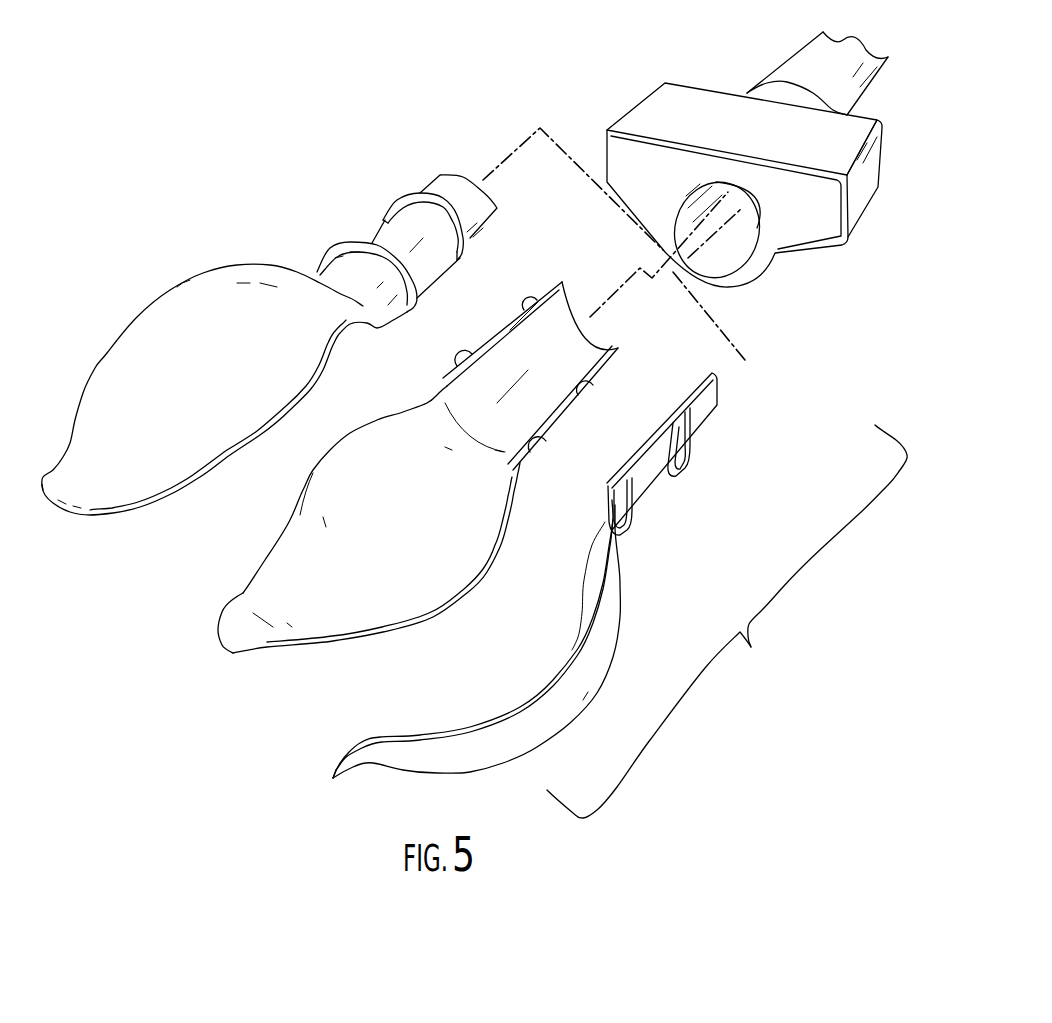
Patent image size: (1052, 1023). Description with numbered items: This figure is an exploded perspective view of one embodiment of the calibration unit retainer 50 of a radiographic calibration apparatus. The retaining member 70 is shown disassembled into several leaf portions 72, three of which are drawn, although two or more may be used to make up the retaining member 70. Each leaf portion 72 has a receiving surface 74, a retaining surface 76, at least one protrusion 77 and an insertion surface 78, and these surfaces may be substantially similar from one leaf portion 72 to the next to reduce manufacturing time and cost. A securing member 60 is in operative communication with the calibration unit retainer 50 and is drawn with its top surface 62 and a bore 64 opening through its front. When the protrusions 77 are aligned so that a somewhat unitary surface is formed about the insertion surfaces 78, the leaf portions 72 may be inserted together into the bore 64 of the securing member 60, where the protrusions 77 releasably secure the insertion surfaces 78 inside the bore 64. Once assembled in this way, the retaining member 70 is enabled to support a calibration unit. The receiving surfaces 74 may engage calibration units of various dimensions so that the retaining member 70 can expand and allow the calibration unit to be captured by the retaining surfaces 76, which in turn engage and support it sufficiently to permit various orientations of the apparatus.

The calibration unit retainer 50 is at (232, 88).
The securing member 60 is at (827, 227).
The top surface of housing 62 is at (767, 133).
The bore 64 is at (743, 247).
The retaining member 70 is at (751, 647).
The leaf portion 72 is at (120, 373).
The receiving surface 74 is at (61, 516).
The retaining surface 76 is at (257, 407).
The protrusion 77 is at (393, 198).
The insertion surface 78 is at (417, 243).